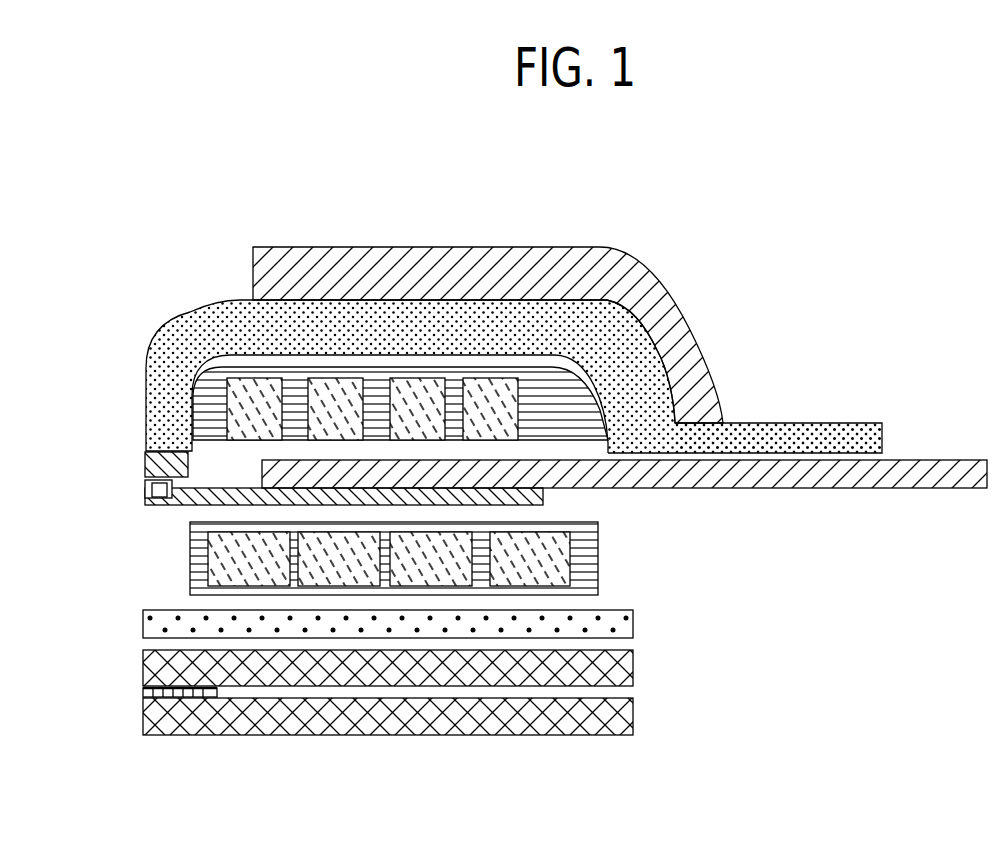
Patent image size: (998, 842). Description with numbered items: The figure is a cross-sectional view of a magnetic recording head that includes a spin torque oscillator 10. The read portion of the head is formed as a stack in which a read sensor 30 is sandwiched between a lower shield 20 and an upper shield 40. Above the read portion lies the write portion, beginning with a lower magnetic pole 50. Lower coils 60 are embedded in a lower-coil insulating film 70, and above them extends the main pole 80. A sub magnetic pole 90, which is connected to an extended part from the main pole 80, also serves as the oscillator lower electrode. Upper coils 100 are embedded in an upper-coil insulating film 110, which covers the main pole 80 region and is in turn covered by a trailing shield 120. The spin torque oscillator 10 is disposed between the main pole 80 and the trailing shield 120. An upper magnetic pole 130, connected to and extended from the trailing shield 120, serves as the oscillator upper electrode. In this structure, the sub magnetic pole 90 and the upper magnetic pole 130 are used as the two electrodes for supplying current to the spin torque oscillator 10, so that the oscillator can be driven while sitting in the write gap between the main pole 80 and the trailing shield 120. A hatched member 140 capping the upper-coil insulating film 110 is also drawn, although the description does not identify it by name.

The spin torque oscillator 10 is at (147, 489).
The lower shield 20 is at (625, 713).
The read sensor 30 is at (155, 693).
The upper shield 40 is at (623, 670).
The lower magnetic pole 50 is at (622, 622).
The lower coils 60 is at (220, 557).
The lower-coil insulating film 70 is at (580, 552).
The main pole 80 is at (545, 500).
The sub magnetic pole/oscillator lower electrode 90 is at (930, 468).
The upper coils 100 is at (240, 413).
The upper-coil insulating film 110 is at (232, 370).
The trailing shield 120 is at (150, 464).
The upper magnetic pole/oscillator upper electrode 130 is at (807, 430).
The cover member 140 is at (512, 270).